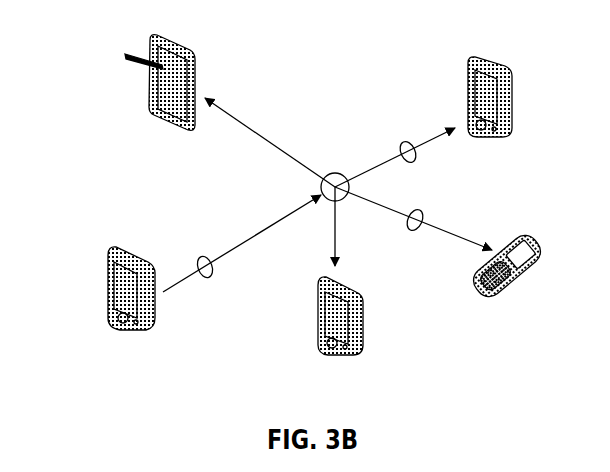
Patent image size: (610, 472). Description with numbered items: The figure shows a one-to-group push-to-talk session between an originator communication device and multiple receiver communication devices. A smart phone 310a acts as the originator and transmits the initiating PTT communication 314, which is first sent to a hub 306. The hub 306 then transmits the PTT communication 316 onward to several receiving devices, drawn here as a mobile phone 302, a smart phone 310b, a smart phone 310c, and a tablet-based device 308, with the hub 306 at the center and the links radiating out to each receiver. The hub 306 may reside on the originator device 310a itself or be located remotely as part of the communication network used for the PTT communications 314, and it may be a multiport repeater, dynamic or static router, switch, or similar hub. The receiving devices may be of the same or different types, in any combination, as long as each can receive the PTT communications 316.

The mobile phone 302 is at (541, 246).
The hub 306 is at (340, 173).
The tablet-based device 308 is at (149, 98).
The smart phone 310a is at (108, 270).
The smart phone 310b is at (350, 357).
The smart phone 310c is at (488, 56).
The initiating PTT communication 314 is at (212, 277).
The PTT communication 316 is at (412, 162).